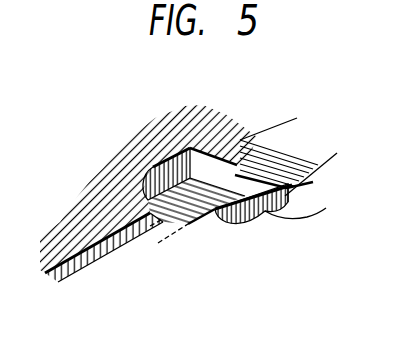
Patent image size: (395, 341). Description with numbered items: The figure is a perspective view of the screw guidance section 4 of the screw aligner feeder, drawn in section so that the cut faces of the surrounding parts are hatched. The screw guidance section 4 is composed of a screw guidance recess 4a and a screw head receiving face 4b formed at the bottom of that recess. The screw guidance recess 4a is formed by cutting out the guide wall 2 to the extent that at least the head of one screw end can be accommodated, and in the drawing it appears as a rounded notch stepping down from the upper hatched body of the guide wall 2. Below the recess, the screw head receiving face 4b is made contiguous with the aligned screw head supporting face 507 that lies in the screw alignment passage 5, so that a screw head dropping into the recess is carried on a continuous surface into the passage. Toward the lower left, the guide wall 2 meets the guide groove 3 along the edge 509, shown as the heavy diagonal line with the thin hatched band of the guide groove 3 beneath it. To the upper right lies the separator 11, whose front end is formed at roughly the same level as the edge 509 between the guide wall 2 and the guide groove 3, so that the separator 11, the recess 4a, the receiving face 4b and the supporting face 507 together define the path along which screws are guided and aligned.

The guide wall 2 is at (114, 178).
The guide groove 3 is at (120, 241).
The screw guidance section 4 is at (217, 182).
The screw guidance recess 4a is at (190, 146).
The screw head receiving face 4b is at (216, 226).
The screw alignment passage 5 is at (348, 217).
The separator 11 is at (242, 232).
The aligned screw head supporting face 507 is at (245, 212).
The edge 509 is at (100, 243).